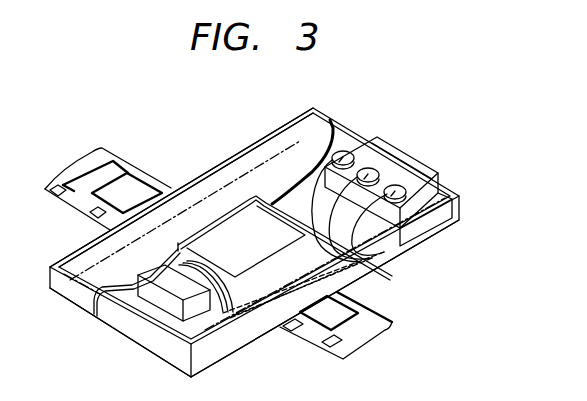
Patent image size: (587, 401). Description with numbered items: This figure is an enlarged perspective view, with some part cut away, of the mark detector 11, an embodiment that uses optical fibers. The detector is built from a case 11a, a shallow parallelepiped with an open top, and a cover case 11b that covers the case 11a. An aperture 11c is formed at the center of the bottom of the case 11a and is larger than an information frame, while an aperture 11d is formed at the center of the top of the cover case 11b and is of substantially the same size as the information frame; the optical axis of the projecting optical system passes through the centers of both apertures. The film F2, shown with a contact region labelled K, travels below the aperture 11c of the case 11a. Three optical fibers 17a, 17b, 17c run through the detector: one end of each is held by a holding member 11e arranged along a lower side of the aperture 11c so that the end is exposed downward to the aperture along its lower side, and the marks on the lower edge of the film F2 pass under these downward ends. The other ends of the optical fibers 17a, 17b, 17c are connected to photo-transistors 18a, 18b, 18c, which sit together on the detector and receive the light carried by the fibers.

The mark detector 11 is at (180, 142).
The case 11a is at (143, 338).
The cover case 11b is at (73, 256).
The aperture 11c is at (213, 240).
The aperture 11d is at (250, 192).
The holding member 11e is at (135, 303).
The film F2 is at (140, 160).
The contact pad K is at (142, 192).
The optical fiber 17a is at (378, 250).
The optical fiber 17b is at (365, 275).
The optical fiber 17c is at (355, 290).
The photo-transistor 18a is at (400, 187).
The photo-transistor 18b is at (373, 169).
The photo-transistor 18c is at (347, 152).